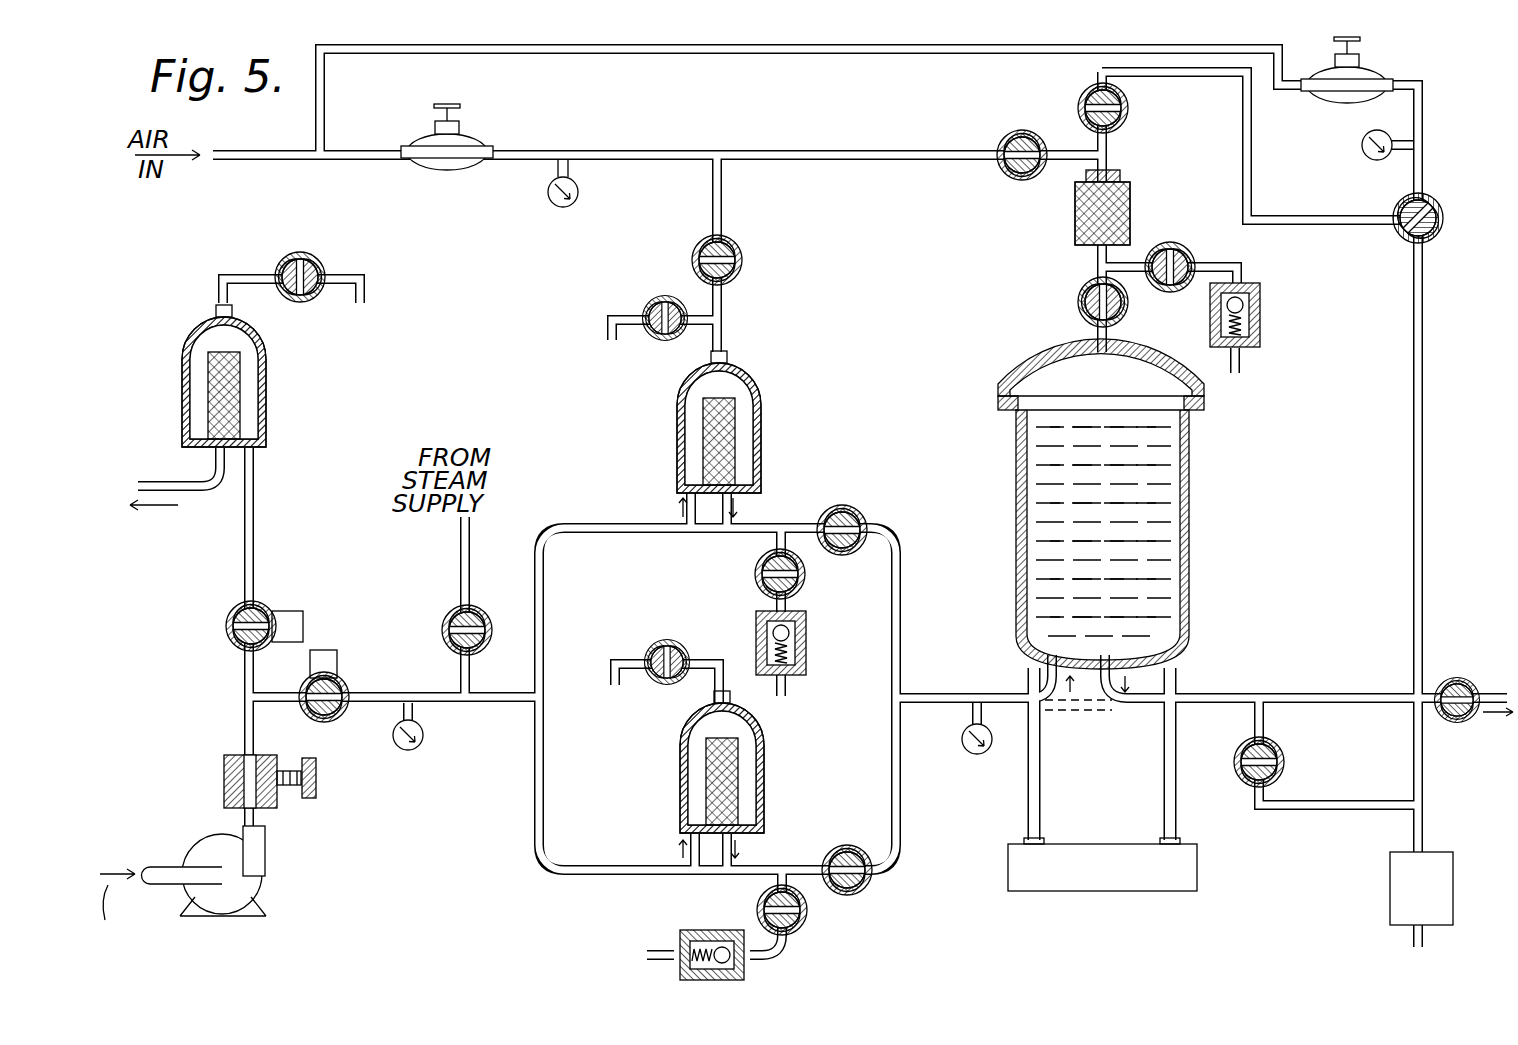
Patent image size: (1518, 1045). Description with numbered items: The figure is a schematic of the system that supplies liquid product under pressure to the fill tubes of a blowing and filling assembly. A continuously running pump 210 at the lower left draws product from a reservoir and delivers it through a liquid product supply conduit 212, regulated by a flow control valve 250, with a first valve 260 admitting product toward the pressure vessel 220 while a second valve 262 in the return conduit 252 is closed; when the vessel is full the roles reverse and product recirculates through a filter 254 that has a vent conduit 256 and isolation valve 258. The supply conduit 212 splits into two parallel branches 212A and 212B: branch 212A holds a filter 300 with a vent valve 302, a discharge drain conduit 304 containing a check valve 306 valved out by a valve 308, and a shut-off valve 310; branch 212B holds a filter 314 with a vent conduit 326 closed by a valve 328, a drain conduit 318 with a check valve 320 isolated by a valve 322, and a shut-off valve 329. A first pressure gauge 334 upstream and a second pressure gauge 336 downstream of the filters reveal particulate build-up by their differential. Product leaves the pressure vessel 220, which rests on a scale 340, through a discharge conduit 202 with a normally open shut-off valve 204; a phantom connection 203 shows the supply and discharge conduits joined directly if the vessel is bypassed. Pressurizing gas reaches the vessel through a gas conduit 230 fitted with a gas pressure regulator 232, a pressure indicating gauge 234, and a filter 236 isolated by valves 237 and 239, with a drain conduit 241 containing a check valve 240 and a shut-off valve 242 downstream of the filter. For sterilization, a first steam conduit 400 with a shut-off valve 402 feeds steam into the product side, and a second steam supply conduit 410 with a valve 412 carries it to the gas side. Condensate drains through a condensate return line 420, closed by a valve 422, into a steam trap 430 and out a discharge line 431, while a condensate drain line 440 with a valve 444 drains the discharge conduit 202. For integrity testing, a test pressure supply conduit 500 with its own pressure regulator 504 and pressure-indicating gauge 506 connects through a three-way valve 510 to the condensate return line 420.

The test pressure supply conduit 500 is at (603, 55).
The pressure regulator 504 is at (1375, 78).
The pressure-indicating gauge 506 is at (1362, 146).
The three-way valve 510 is at (1434, 205).
The gas pressure regulator 232 is at (462, 138).
The gas conduit 230 is at (251, 165).
The pressure indicating gauge 234 is at (557, 208).
The second steam supply conduit 410 is at (722, 215).
The valve 412 is at (742, 262).
The valve 237 is at (1002, 142).
The valve 422 is at (1082, 100).
The filter 236 is at (1126, 212).
The drain conduit 241 is at (1203, 264).
The shut-off valve 242 is at (1172, 295).
The check valve 240 is at (1262, 302).
The valve 239 is at (1080, 306).
The pressure vessel 220 is at (1192, 556).
The filter 254 is at (267, 405).
The vent conduit 256 is at (246, 276).
The isolation valve 258 is at (324, 270).
The return conduit 252 is at (257, 551).
The second valve 262 is at (267, 612).
The first valve 260 is at (348, 684).
The liquid product supply conduit 212 is at (258, 742).
The flow control valve 250 is at (282, 808).
The pump 210 is at (258, 874).
The first steam conduit 400 is at (460, 551).
The shut-off valve 402 is at (452, 612).
The first pressure gauge 334 is at (403, 750).
The valve 328 is at (645, 312).
The vent conduit 326 is at (699, 338).
The filter 314 is at (774, 460).
The shut-off valve 329 is at (858, 516).
The drain conduit 318 is at (776, 540).
The valve 322 is at (806, 577).
The check valve 320 is at (808, 649).
The vent valve 302 is at (679, 647).
The filter 300 is at (766, 765).
The shut-off valve 310 is at (846, 847).
The valve 308 is at (808, 913).
The discharge drain conduit 304 is at (787, 948).
The check valve 306 is at (712, 930).
The branch conduit 212A is at (543, 755).
The branch conduit 212B is at (543, 599).
The second pressure gauge 336 is at (968, 758).
The direct communication 203 is at (1085, 722).
The scale 340 is at (1211, 879).
The discharge conduit 202 is at (1298, 696).
The shut-off valve 204 is at (1457, 688).
The valve 444 is at (1280, 754).
The condensate drain line 440 is at (1300, 803).
The condensate return line 420 is at (1413, 258).
The steam trap 430 is at (1440, 868).
The discharge line 431 is at (1412, 940).